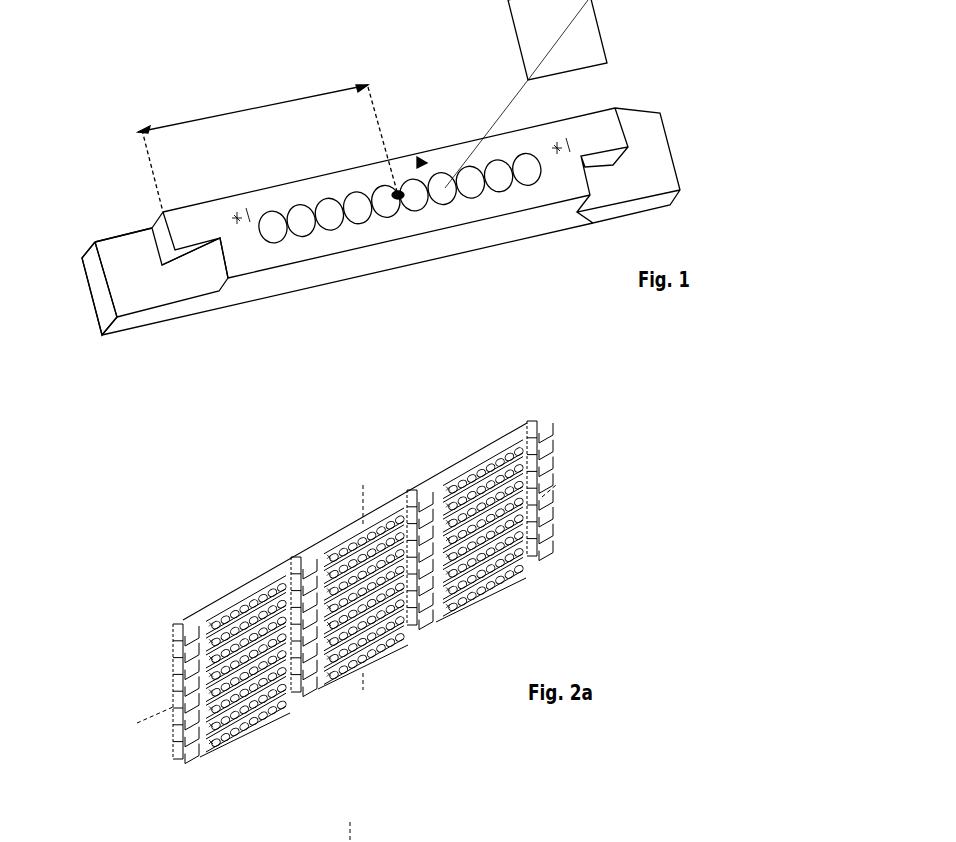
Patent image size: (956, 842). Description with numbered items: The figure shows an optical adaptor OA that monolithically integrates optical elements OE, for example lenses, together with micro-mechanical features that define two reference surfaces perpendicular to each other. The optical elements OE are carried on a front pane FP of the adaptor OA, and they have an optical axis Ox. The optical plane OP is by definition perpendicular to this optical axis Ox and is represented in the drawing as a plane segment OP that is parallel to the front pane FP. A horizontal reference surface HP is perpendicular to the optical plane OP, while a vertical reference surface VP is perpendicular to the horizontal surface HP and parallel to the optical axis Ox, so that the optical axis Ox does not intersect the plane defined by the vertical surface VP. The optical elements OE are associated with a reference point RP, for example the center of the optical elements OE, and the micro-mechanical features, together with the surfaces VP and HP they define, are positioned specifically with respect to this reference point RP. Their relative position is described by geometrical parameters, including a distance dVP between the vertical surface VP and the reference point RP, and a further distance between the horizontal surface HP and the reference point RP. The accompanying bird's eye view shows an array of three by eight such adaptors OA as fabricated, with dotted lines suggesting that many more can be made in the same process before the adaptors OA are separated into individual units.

In FIG. 1, the optical adaptor OA is at (452, 240).
In FIG. 2A, the optical adaptor OA is at (518, 546).
In FIG. 1, the vertical reference surface VP is at (150, 227).
In FIG. 1, the horizontal reference surface HP is at (208, 257).
In FIG. 1, the reference point RP is at (392, 193).
In FIG. 1, the front pane FP is at (430, 155).
In FIG. 1, the optical elements OE is at (444, 187).
In FIG. 1, the optical axis Ox is at (516, 89).
In FIG. 1, the optical plane OP is at (607, 63).
In FIG. 1, the distance between vertical surface and reference point dVP is at (268, 146).